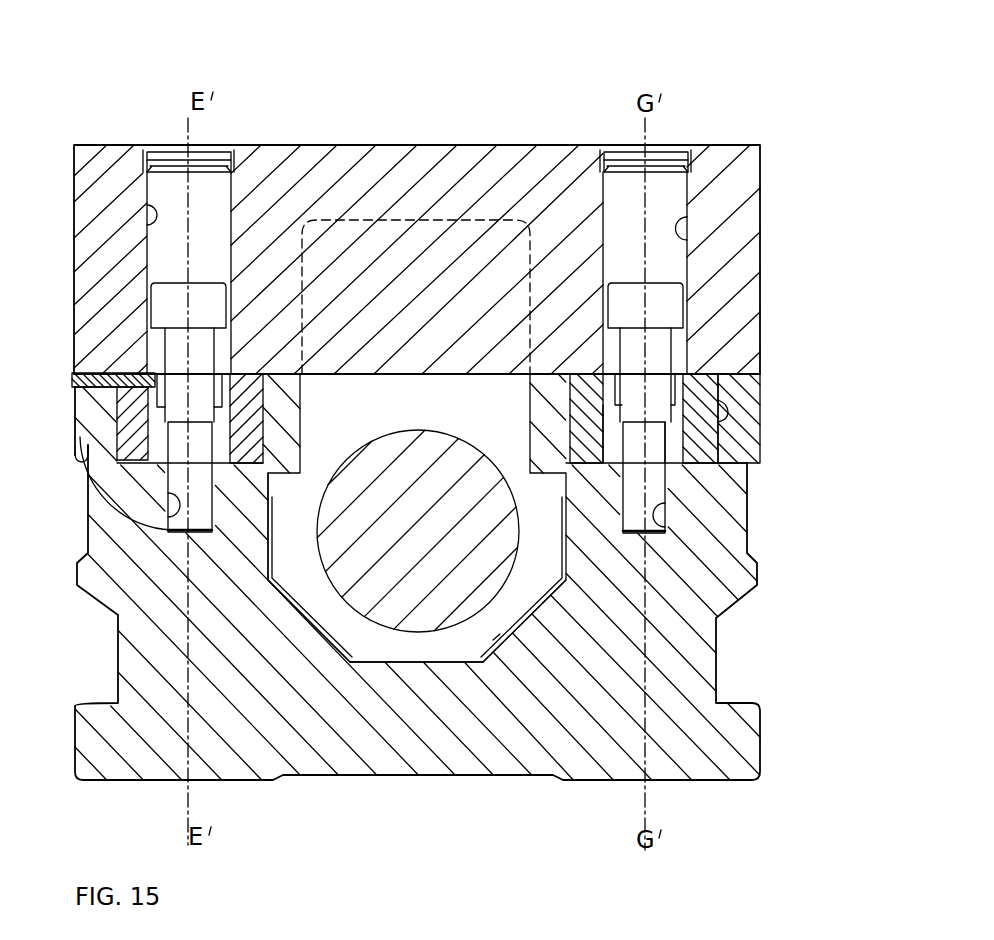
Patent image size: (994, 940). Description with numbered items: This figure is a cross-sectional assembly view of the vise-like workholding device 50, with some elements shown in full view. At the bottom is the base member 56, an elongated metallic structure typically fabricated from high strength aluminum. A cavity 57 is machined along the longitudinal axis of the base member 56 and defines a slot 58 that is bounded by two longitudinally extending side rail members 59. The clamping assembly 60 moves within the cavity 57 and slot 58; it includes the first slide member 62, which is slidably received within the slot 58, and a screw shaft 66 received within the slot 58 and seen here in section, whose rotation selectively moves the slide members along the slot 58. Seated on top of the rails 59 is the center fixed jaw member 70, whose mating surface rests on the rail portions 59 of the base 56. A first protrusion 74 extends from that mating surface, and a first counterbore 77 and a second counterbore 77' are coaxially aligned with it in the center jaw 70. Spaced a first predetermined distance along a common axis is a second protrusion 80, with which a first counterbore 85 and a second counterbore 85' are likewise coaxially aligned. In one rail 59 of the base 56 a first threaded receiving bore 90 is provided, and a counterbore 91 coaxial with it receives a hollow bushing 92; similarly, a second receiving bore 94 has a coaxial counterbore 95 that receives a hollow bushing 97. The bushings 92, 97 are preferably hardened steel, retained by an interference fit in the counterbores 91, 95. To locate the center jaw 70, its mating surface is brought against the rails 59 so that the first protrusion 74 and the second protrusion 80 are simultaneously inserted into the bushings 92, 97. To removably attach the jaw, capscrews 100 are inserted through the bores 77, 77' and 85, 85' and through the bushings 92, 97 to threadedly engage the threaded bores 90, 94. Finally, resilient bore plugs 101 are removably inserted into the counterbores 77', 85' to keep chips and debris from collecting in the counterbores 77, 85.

The vise-like workholding device 50 is at (468, 62).
The base member 56 is at (437, 756).
The cavity 57 is at (535, 650).
The slot 58 is at (268, 497).
The side rail members 59 is at (745, 433).
The clamping assembly 60 is at (350, 662).
The first slide member 62 is at (438, 409).
The screw shaft 66 is at (430, 607).
The center fixed jaw member 70 is at (345, 150).
The first protrusion 74 is at (157, 382).
The first counterbore 77 is at (128, 273).
The second counterbore 77' is at (123, 160).
The second protrusion 80 is at (655, 402).
The first counterbore 85 is at (716, 273).
The second counterbore 85' is at (729, 164).
The first threaded receiving bore 90 is at (170, 517).
The counterbore 91 is at (117, 432).
The hollow bushing 92 is at (117, 492).
The second receiving bore 94 is at (668, 522).
The counterbore 95 is at (727, 416).
The hollow bushing 97 is at (688, 466).
The capscrews 100 is at (170, 311).
The resilient bore plugs 101 is at (212, 148).